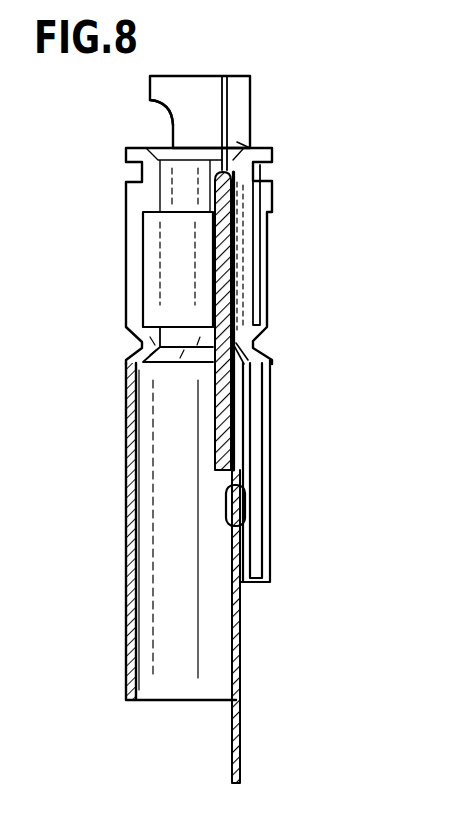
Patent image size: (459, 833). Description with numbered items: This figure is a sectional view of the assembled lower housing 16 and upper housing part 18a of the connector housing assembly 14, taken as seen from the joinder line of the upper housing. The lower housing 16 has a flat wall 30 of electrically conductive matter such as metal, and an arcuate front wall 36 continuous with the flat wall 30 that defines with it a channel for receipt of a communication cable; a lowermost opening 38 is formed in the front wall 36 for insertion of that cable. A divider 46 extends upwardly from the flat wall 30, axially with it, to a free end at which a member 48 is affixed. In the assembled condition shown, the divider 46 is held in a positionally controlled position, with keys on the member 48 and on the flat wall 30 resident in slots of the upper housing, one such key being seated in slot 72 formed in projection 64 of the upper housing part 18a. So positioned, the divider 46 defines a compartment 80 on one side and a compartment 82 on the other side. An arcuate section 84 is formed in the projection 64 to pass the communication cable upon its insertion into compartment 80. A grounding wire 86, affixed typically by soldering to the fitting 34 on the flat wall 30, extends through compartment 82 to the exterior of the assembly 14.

The projection 64 is at (188, 84).
The slot 72 is at (230, 98).
The arcuate section 84 is at (172, 118).
The grounding wire 86 is at (312, 112).
The connector housing assembly 14 is at (294, 323).
The compartment 80 is at (165, 238).
The member 48 is at (212, 178).
The divider 46 is at (236, 250).
The compartment 82 is at (247, 282).
The lower housing 16 is at (112, 418).
The arcuate front wall 36 is at (127, 503).
The upper housing part 18a is at (283, 400).
The flat wall 30 is at (242, 622).
The fitting 34 is at (245, 512).
The lowermost opening 38 is at (196, 741).